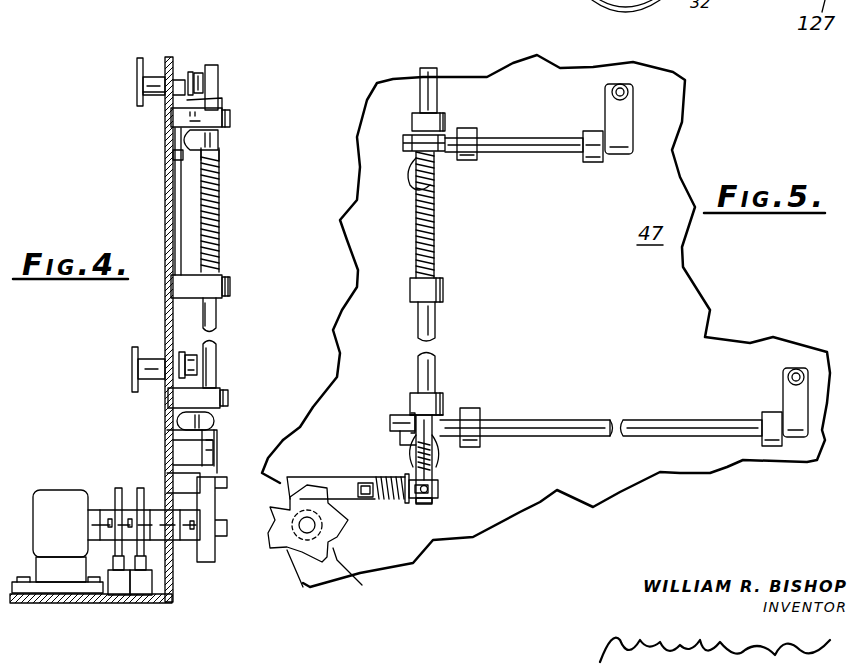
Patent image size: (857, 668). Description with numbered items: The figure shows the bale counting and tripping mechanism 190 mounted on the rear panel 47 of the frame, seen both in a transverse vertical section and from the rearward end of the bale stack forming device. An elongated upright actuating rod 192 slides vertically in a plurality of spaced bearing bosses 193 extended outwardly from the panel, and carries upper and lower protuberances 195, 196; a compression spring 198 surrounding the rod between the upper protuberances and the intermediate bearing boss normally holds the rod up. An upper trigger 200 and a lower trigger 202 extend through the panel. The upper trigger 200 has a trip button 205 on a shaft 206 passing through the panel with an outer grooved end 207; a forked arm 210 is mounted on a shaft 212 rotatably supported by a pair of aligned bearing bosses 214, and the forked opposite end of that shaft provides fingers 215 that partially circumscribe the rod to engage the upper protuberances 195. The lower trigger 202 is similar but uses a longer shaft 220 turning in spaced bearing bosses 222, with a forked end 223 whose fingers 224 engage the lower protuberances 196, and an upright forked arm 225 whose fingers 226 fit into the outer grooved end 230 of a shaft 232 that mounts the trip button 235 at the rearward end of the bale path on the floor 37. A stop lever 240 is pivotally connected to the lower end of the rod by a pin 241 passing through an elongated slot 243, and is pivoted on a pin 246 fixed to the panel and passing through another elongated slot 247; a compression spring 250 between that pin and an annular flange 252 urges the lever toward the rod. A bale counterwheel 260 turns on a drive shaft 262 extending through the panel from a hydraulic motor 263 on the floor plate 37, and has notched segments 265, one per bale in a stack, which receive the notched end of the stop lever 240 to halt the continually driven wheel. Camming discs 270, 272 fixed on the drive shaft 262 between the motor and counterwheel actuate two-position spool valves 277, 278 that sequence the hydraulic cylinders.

In FIG. 4, the floor 37 is at (60, 603).
In FIG. 5, the rear panel 47 is at (546, 321).
In FIG. 4, the bale counting and tripping mechanism 190 is at (218, 462).
In FIG. 5, the bale counting and tripping mechanism 190 is at (518, 368).
In FIG. 4, the actuating rod 192 is at (216, 358).
In FIG. 5, the actuating rod 192 is at (440, 325).
In FIG. 4, the bearing bosses 193 is at (178, 116).
In FIG. 5, the bearing bosses 193 is at (445, 120).
In FIG. 4, the upper protuberances 195 is at (218, 153).
In FIG. 5, the upper protuberances 195 is at (443, 162).
In FIG. 4, the lower protuberances 196 is at (200, 444).
In FIG. 5, the lower protuberances 196 is at (440, 455).
In FIG. 4, the compression spring 198 is at (222, 212).
In FIG. 5, the compression spring 198 is at (440, 240).
In FIG. 4, the upper trigger 200 is at (179, 60).
In FIG. 5, the upper trigger 200 is at (642, 93).
In FIG. 5, the lower trigger 202 is at (790, 446).
In FIG. 4, the trip button 205 is at (137, 63).
In FIG. 4, the shaft 206 is at (153, 80).
In FIG. 4, the outer grooved end 207 is at (205, 75).
In FIG. 4, the forked arm 210 is at (222, 98).
In FIG. 4, the shaft 212 is at (181, 140).
In FIG. 5, the shaft 212 is at (547, 150).
In FIG. 4, the bearing bosses 214 is at (180, 155).
In FIG. 5, the bearing bosses 214 is at (480, 128).
In FIG. 4, the fingers 215 is at (218, 138).
In FIG. 5, the fingers 215 is at (420, 150).
In FIG. 5, the shaft 220 is at (657, 420).
In FIG. 5, the bearing bosses 222 is at (480, 412).
In FIG. 5, the forked end 223 is at (403, 418).
In FIG. 5, the fingers 224 is at (395, 433).
In FIG. 5, the forked arm 225 is at (790, 398).
In FIG. 5, the fingers 226 is at (790, 373).
In FIG. 4, the outer grooved end 230 is at (193, 358).
In FIG. 4, the shaft 232 is at (153, 358).
In FIG. 4, the trip button 235 is at (132, 368).
In FIG. 5, the stop lever 240 is at (342, 480).
In FIG. 5, the pin 241 is at (440, 489).
In FIG. 5, the elongated slot 243 is at (430, 502).
In FIG. 5, the pin 246 is at (380, 505).
In FIG. 5, the elongated slot 247 is at (350, 520).
In FIG. 5, the compression spring 250 is at (415, 508).
In FIG. 5, the annular flange 252 is at (445, 505).
In FIG. 5, the bale counterwheel 260 is at (282, 556).
In FIG. 4, the drive shaft 262 is at (172, 540).
In FIG. 4, the hydraulic motor 263 is at (50, 473).
In FIG. 5, the notched segments 265 is at (345, 560).
In FIG. 4, the camming disc 270 is at (195, 430).
In FIG. 4, the camming disc 272 is at (140, 490).
In FIG. 4, the spool valve 277 is at (143, 598).
In FIG. 4, the spool valve 278 is at (116, 598).